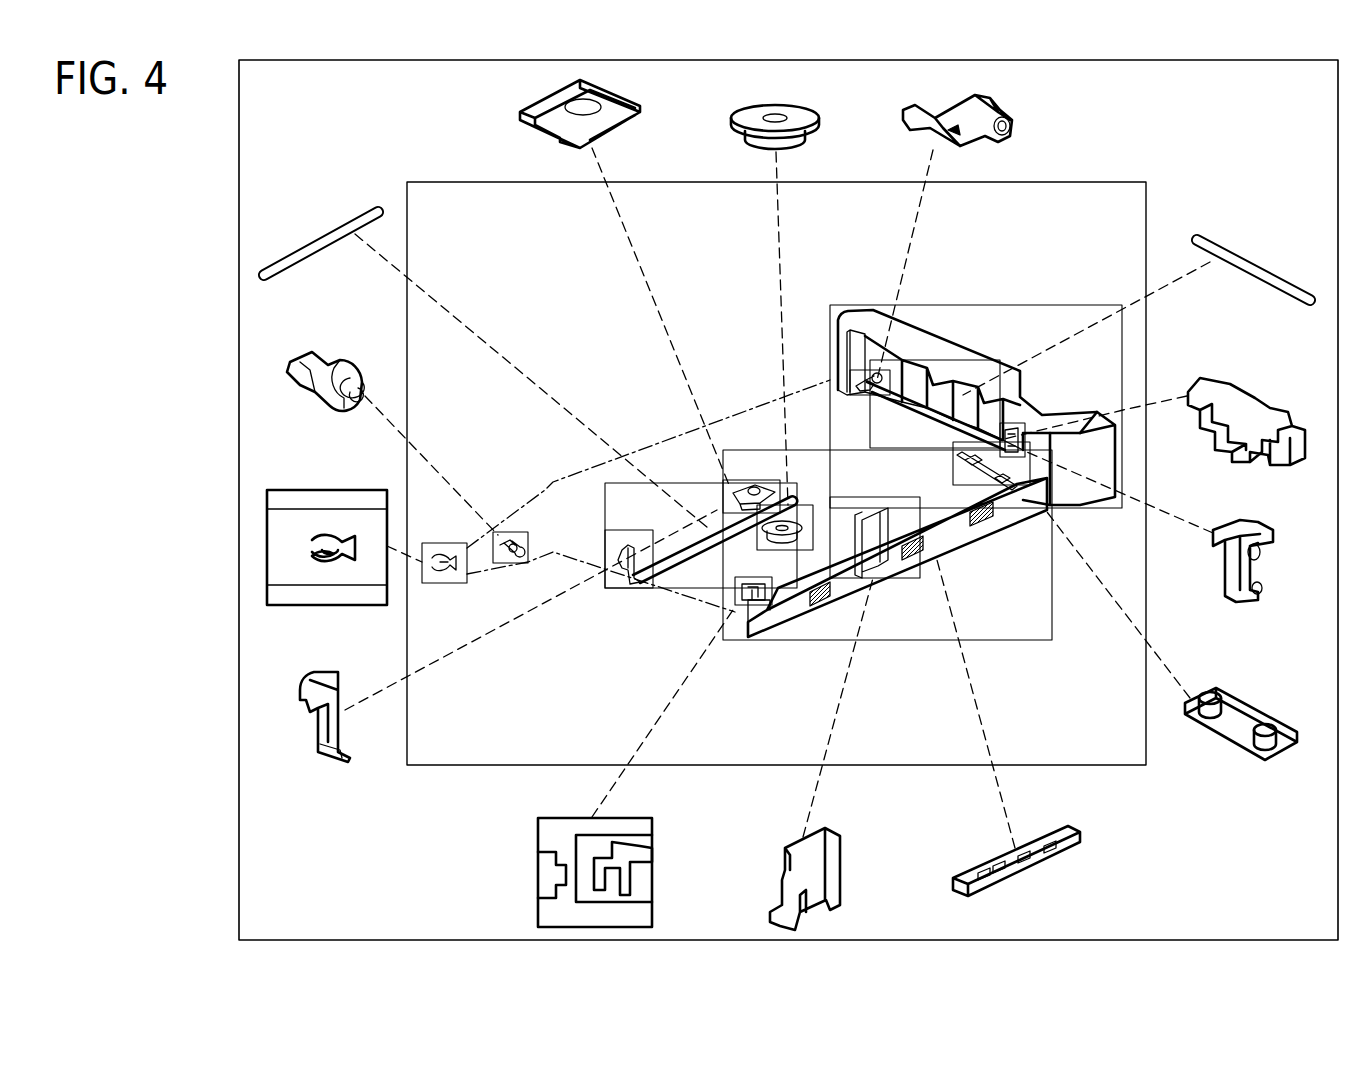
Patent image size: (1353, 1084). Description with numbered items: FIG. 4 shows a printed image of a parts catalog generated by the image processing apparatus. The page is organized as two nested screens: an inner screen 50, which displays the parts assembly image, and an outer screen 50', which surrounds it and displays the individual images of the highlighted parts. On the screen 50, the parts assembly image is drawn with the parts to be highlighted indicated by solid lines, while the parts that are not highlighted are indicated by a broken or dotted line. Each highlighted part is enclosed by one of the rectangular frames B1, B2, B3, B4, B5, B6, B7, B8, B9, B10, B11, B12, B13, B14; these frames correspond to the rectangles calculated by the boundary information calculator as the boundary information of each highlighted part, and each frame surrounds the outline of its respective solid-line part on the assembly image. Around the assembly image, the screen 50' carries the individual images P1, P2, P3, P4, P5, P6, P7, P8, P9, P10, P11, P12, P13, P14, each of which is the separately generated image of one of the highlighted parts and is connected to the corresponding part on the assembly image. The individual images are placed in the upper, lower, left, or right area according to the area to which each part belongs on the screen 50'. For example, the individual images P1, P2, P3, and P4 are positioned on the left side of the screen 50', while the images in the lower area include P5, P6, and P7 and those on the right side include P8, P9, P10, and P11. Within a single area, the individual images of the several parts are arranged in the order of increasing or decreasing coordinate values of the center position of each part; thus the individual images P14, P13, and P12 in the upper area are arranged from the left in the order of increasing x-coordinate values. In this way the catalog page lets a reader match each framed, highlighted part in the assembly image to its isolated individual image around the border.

The screen 50 is at (776, 453).
The screen 50' is at (759, 500).
The rectangular frame B1 is at (605, 492).
The rectangular frame B2 is at (504, 532).
The rectangular frame B3 is at (434, 584).
The rectangular frame B4 is at (622, 590).
The rectangular frame B5 is at (756, 636).
The rectangular frame B6 is at (904, 578).
The rectangular frame B7 is at (1018, 640).
The rectangular frame B8 is at (1003, 486).
The rectangular frame B9 is at (1024, 440).
The rectangular frame B10 is at (1030, 305).
The rectangular frame B11 is at (948, 360).
The rectangular frame B12 is at (850, 370).
The rectangular frame B13 is at (804, 506).
The rectangular frame B14 is at (748, 480).
The individual image P1 is at (302, 239).
The individual image P2 is at (338, 352).
The individual image P3 is at (342, 490).
The individual image P4 is at (332, 672).
The individual image P5 is at (618, 816).
The individual image P6 is at (818, 824).
The individual image P7 is at (1062, 822).
The individual image P8 is at (1268, 700).
The individual image P9 is at (1266, 522).
The individual image P10 is at (1284, 404).
The individual image P11 is at (1284, 276).
The individual image P12 is at (887, 117).
The individual image P13 is at (714, 127).
The individual image P14 is at (512, 111).